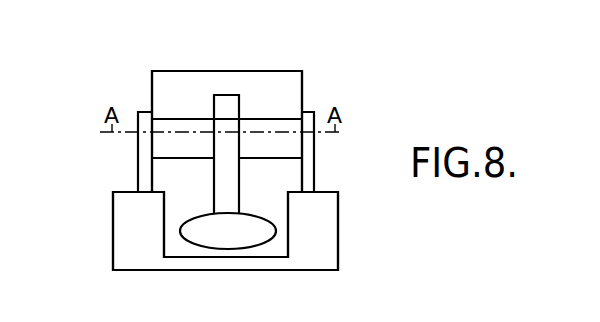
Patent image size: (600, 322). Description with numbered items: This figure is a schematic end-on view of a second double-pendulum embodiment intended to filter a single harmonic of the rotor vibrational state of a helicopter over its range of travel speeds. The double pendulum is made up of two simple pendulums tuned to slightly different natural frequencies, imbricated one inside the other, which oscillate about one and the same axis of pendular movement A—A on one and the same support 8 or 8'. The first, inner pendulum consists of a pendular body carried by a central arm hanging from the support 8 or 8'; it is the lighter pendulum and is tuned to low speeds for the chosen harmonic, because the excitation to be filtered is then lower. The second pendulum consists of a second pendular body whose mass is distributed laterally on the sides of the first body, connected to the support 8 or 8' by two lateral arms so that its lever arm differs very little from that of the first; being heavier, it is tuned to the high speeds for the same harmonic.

The support 8 is at (240, 102).
The support 8' is at (227, 131).